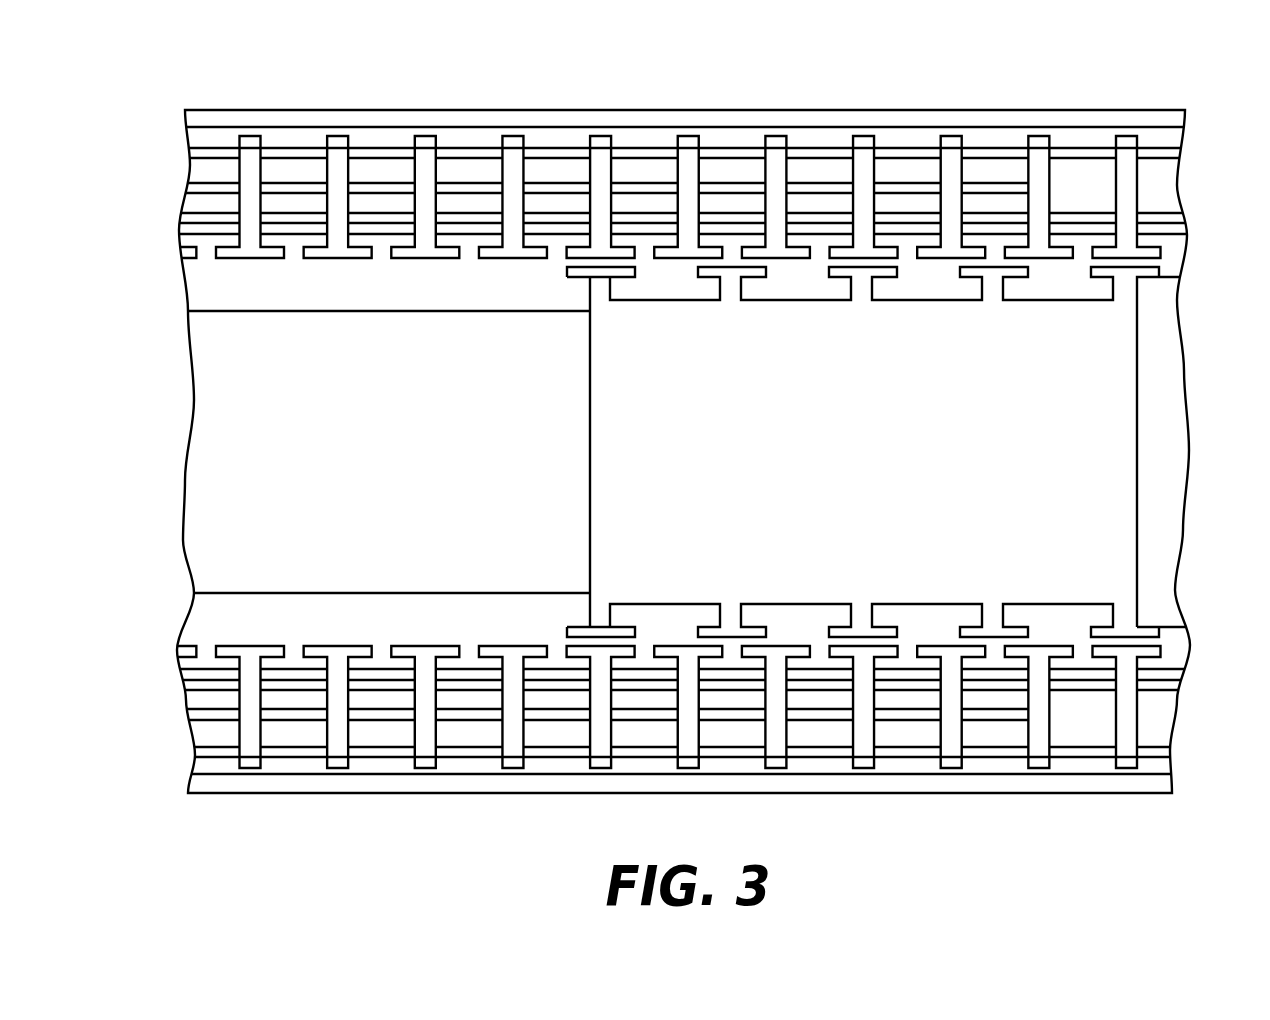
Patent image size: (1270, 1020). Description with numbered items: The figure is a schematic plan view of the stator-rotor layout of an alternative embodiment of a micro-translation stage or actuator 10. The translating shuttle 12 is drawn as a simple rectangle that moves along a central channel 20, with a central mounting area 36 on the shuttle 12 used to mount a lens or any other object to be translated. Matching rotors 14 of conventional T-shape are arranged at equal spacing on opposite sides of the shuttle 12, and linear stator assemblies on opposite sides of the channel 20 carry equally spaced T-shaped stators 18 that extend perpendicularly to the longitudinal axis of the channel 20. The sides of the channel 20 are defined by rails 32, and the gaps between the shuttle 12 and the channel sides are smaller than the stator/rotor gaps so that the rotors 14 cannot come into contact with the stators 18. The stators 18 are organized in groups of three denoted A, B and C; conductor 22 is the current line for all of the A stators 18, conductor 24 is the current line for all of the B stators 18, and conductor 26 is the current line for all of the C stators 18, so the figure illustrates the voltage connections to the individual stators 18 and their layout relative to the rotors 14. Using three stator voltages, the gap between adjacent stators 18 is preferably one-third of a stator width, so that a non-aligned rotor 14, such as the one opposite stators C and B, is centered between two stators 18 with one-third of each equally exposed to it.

The translation stage 10 is at (617, 76).
The translating shuttle 12 is at (588, 541).
The rotors 14 is at (732, 284).
The stators 18 is at (1123, 136).
The central channel 20 is at (345, 445).
The conductor 22 is at (1163, 753).
The conductor 24 is at (194, 718).
The conductor 26 is at (1178, 683).
The rails 32 is at (201, 314).
The central mounting area 36 is at (822, 467).